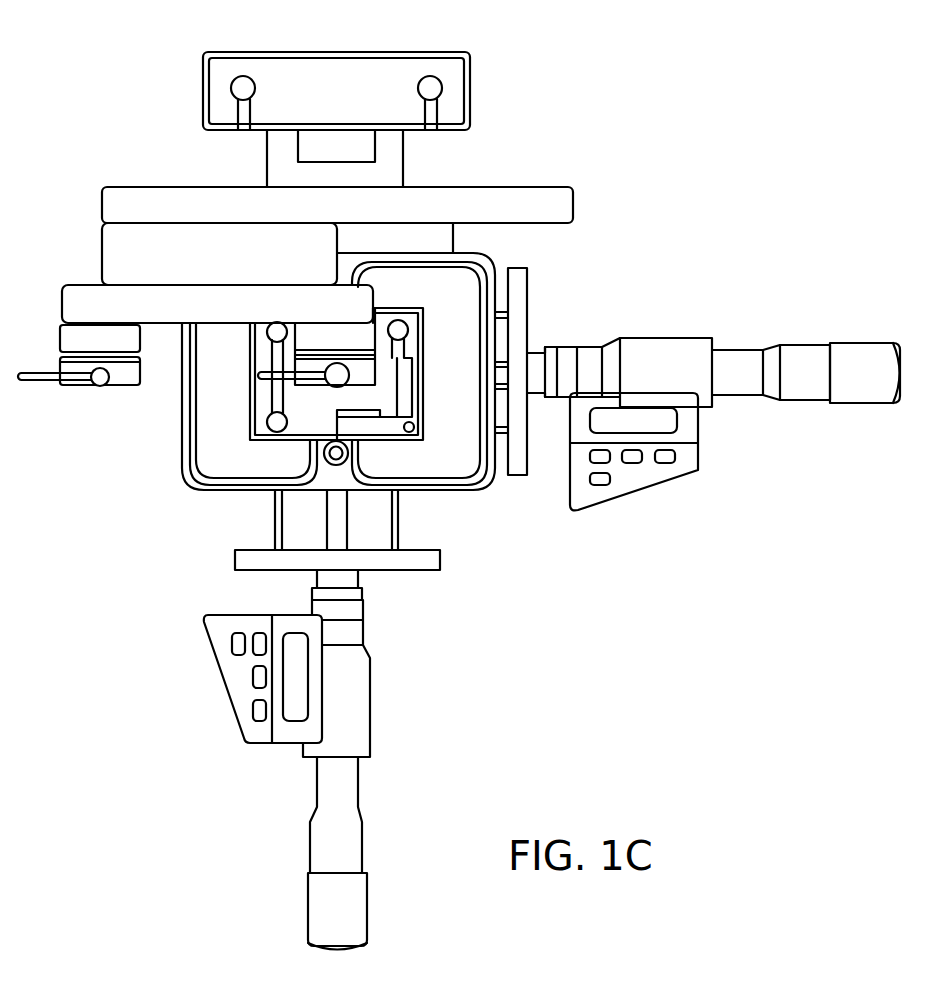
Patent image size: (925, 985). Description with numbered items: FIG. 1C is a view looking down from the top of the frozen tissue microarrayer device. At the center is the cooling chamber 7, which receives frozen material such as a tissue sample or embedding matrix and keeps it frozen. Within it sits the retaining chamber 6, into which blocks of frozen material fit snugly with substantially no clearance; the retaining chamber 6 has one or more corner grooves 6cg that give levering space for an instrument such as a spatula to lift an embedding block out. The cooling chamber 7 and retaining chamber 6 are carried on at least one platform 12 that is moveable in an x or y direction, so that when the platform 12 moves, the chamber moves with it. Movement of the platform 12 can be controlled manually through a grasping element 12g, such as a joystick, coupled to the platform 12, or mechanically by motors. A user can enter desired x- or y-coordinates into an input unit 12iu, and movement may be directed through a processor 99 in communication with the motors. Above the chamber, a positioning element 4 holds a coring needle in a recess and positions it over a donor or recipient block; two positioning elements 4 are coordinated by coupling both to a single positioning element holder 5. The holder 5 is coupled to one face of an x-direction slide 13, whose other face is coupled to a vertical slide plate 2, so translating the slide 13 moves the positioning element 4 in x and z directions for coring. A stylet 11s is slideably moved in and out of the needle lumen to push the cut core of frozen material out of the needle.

The vertical slide plate 2 is at (446, 60).
The x-direction slide 13 is at (392, 162).
The positioning element holder 5 is at (176, 318).
The positioning element 4 is at (70, 342).
The stylet 11s is at (100, 388).
The cooling chamber 7 is at (460, 452).
The retaining chamber 6 is at (297, 412).
The corner groove 6cg is at (268, 424).
The platform 12 is at (517, 290).
The input unit 12iu is at (600, 487).
The processor 99 is at (643, 416).
The grasping element 12g is at (890, 388).